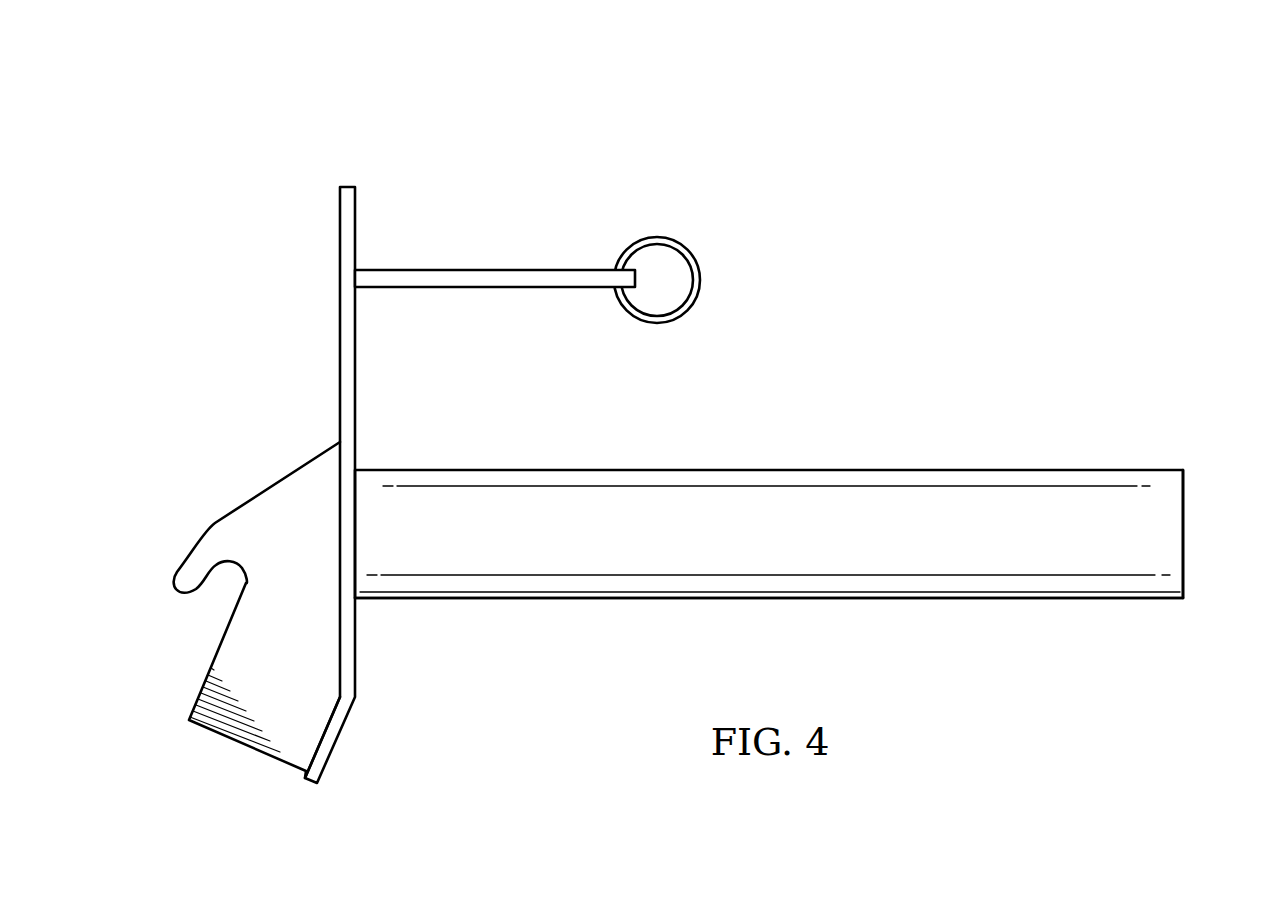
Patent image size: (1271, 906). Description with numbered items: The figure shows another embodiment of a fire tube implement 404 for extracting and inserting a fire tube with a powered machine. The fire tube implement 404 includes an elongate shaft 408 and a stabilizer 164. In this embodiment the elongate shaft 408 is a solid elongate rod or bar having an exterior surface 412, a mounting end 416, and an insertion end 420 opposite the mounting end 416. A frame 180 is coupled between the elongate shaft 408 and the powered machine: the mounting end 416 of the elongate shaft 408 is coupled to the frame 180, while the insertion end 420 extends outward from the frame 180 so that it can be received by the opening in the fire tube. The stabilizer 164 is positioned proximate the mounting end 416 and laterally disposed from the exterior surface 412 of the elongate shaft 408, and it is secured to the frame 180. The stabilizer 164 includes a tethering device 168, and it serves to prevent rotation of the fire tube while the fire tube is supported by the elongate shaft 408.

The fire tube implement 404 is at (420, 88).
The frame 180 is at (340, 310).
The stabilizer 164 is at (555, 289).
The tethering device 168 is at (657, 237).
The mounting end 416 is at (368, 600).
The exterior surface 412 is at (750, 600).
The elongate shaft 408 is at (993, 598).
The insertion end 420 is at (1183, 545).